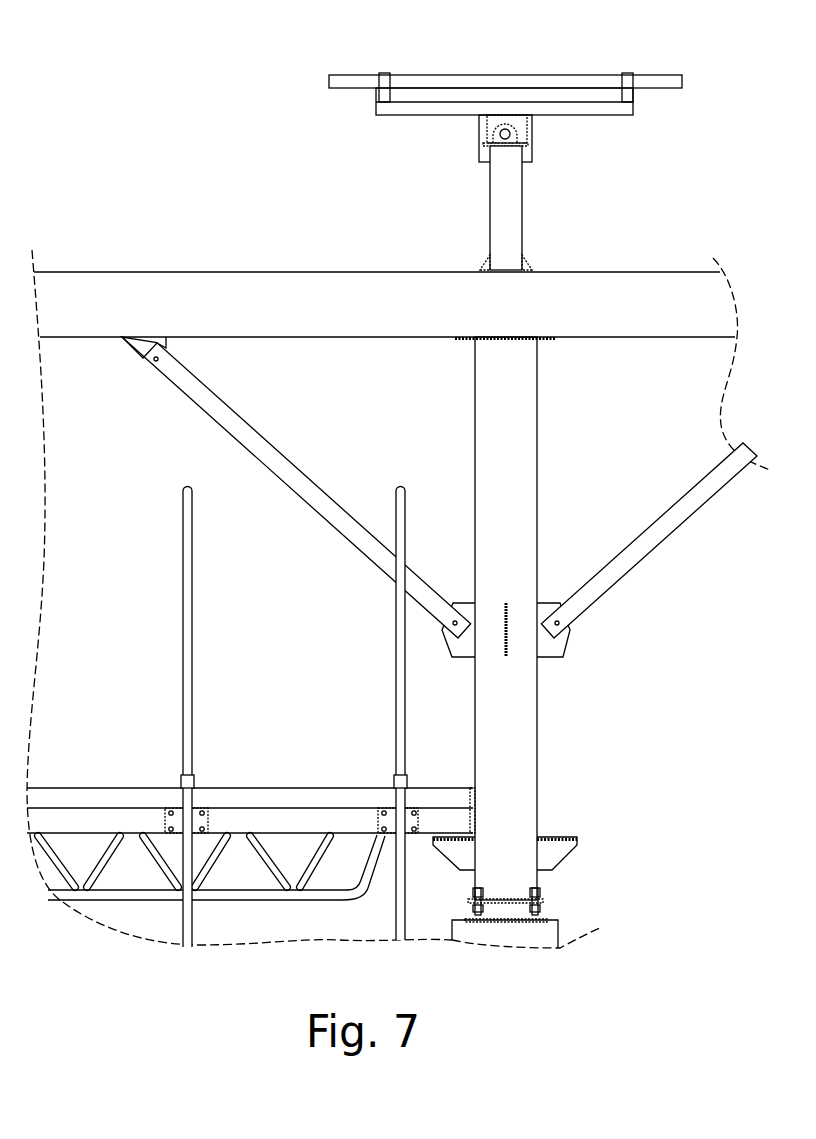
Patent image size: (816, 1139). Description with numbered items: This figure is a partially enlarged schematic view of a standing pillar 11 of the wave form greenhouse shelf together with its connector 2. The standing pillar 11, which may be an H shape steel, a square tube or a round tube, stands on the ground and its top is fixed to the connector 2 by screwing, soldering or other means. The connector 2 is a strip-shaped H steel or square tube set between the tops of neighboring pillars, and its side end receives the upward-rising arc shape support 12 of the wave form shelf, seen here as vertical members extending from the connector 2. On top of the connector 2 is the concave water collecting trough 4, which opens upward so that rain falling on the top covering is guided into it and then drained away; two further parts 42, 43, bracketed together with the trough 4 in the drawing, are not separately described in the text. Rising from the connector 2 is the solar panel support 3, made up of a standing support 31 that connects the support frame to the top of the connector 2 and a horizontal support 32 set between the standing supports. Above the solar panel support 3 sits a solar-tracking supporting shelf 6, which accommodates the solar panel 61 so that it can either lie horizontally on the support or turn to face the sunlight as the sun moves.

The connector 2 is at (270, 820).
The solar panel support 3 is at (655, 420).
The water collecting trough 4 is at (251, 772).
The solar-tracking supporting shelf 6 is at (500, 218).
The standing pillar 11 is at (548, 930).
The arc shape support 12 is at (185, 517).
The standing support 31 is at (520, 467).
The horizontal support 32 is at (575, 320).
The connecting beam 42 is at (250, 774).
The connecting plate 43 is at (472, 790).
The solar panel 61 is at (430, 79).